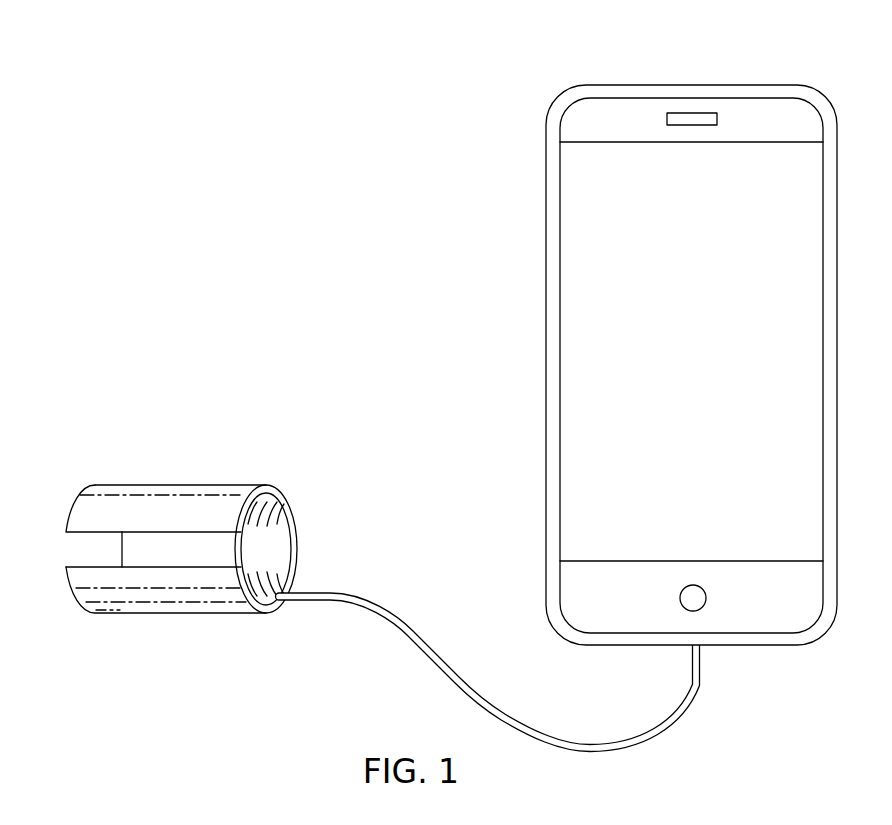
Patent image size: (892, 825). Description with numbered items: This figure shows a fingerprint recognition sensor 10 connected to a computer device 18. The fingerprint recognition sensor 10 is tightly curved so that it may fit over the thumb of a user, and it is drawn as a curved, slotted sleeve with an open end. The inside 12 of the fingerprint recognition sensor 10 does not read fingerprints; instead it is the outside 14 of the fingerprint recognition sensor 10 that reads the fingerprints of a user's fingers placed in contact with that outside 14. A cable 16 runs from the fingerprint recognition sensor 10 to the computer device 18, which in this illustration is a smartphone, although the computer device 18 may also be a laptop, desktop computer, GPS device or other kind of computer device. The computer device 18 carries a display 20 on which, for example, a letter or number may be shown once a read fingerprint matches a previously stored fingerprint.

The fingerprint recognition sensor 10 is at (196, 586).
The inside 12 is at (262, 546).
The outside 14 is at (92, 502).
The cable 16 is at (457, 678).
The computer device 18 is at (644, 331).
The display 20 is at (749, 170).